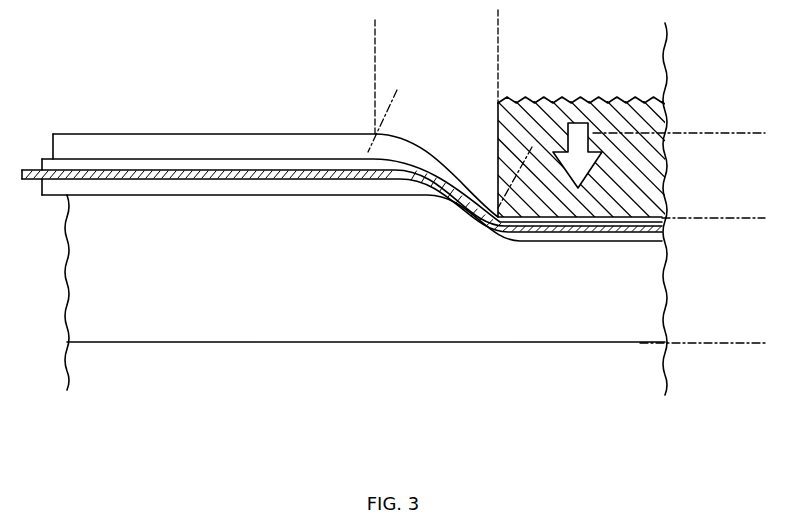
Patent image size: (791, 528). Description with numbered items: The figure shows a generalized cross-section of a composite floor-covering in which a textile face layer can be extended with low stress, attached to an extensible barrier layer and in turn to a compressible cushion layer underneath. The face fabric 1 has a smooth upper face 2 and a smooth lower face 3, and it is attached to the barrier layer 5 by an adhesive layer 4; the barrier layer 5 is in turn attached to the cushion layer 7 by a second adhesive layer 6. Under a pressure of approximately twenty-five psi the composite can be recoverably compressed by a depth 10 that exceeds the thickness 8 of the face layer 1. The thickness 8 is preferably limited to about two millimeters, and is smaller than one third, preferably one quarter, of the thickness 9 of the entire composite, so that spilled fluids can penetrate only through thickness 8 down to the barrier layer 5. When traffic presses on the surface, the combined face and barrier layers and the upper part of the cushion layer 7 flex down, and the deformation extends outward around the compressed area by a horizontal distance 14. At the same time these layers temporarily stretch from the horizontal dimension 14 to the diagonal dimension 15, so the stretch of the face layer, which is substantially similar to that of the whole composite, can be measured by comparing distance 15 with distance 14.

The face fabric 1 is at (113, 145).
The smooth upper face 2 is at (145, 133).
The smooth lower face 3 is at (163, 160).
The adhesive layer 4 is at (198, 165).
The barrier layer 5 is at (230, 172).
The adhesive layer 6 is at (270, 185).
The cushion layer 7 is at (140, 325).
The thickness 8 is at (85, 218).
The thickness 9 is at (758, 218).
The depth 10 is at (708, 133).
The horizontal distance 14 is at (375, 58).
The diagonal dimension 15 is at (392, 110).